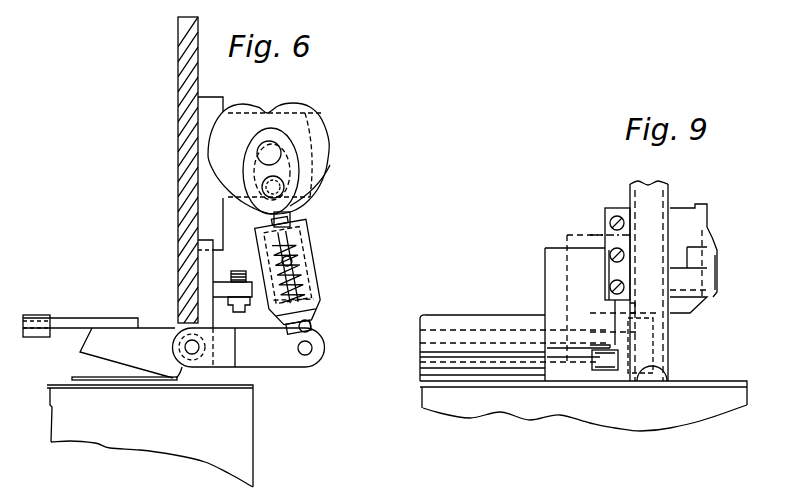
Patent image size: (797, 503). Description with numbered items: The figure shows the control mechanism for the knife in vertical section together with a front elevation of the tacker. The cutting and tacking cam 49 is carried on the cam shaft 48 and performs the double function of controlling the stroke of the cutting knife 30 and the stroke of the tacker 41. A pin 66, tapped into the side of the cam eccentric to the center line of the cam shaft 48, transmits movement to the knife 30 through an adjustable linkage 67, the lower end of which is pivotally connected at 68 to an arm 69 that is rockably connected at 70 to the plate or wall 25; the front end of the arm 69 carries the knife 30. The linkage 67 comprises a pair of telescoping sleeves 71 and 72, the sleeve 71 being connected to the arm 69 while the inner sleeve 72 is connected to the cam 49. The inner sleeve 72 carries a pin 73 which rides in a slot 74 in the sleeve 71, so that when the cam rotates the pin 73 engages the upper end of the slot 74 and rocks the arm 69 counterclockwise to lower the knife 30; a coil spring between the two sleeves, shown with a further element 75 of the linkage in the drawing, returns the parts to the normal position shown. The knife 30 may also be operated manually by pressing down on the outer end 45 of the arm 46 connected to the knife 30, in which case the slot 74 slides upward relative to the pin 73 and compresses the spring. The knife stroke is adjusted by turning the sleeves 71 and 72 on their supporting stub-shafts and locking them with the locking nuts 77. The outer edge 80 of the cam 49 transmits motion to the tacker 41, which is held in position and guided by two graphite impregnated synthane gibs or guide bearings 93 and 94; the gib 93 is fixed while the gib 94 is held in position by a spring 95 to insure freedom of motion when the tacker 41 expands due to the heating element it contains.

In FIG. 6, the plate or wall 25 is at (182, 90).
In FIG. 6, the cam shaft 48 is at (274, 140).
In FIG. 6, the cutting and tacking cam 49 is at (315, 118).
In FIG. 6, the outer edge of cam 80 is at (328, 155).
In FIG. 6, the pin 66 is at (300, 185).
In FIG. 6, the locking nuts 77 is at (300, 213).
In FIG. 6, the inner sleeve 72 is at (300, 238).
In FIG. 6, the pin 73 is at (300, 248).
In FIG. 6, the adjustable linkage 67 is at (318, 260).
In FIG. 6, the slot 74 is at (292, 272).
In FIG. 6, the stop 75 is at (306, 290).
In FIG. 6, the outer sleeve 71 is at (314, 306).
In FIG. 6, the pivotal connection 68 is at (312, 348).
In FIG. 6, the arm 69 is at (274, 366).
In FIG. 6, the rockable connection 70 is at (180, 350).
In FIG. 6, the outer end of arm 45 is at (38, 315).
In FIG. 6, the arm 46 is at (104, 318).
In FIG. 6, the knife 30 is at (78, 352).
In FIG. 9, the gib or guide bearing 93 is at (605, 216).
In FIG. 9, the spring 95 is at (720, 246).
In FIG. 9, the gib or guide bearing 94 is at (703, 296).
In FIG. 9, the tacker 41 is at (670, 335).